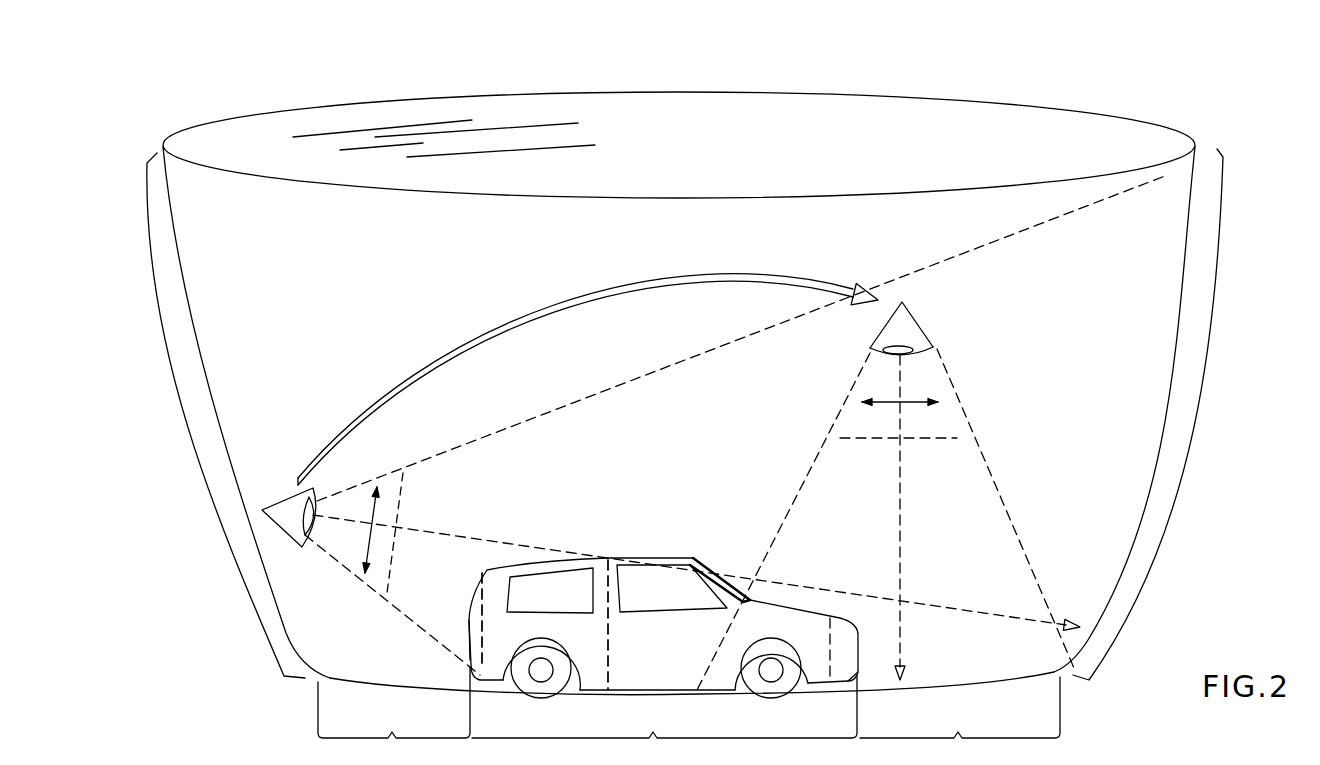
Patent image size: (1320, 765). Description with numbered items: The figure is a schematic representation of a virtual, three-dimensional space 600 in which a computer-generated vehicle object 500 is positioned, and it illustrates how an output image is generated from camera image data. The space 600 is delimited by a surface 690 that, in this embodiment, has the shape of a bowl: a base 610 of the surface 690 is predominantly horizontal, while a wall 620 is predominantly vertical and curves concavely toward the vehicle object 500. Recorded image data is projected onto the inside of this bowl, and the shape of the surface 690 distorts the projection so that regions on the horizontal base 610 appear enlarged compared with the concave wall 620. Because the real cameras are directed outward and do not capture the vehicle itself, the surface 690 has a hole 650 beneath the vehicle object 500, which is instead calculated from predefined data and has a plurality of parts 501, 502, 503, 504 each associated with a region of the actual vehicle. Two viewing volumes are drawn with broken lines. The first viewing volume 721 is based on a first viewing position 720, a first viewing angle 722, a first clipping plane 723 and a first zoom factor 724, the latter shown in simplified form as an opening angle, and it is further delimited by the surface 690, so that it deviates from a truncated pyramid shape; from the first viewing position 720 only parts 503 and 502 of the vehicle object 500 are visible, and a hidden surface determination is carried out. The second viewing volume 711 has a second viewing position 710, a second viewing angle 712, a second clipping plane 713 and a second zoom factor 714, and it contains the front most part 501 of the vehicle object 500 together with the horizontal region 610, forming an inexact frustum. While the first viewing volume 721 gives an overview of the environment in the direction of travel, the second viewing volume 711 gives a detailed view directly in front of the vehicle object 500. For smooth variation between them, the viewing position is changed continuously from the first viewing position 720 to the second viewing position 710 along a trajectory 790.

The virtual, three-dimensional space 600 is at (957, 132).
The surface 690 is at (1062, 110).
The wall 620 is at (697, 414).
The base 610 is at (689, 702).
The hole 650 is at (664, 707).
The vehicle object 500 is at (626, 545).
The front most part of vehicle object 501 is at (840, 690).
The part of vehicle object 502 is at (697, 645).
The part of vehicle object 503 is at (485, 640).
The part of vehicle object 504 is at (466, 594).
The second viewing position 710 is at (926, 320).
The second viewing volume 711 is at (987, 573).
The second viewing angle 712 is at (908, 489).
The second clipping plane 713 is at (926, 430).
The second zoom factor 714 is at (923, 394).
The first viewing position 720 is at (275, 492).
The first viewing volume 721 is at (432, 601).
The first viewing angle 722 is at (461, 532).
The first clipping plane 723 is at (403, 513).
The first zoom factor 724 is at (360, 543).
The trajectory 790 is at (493, 312).